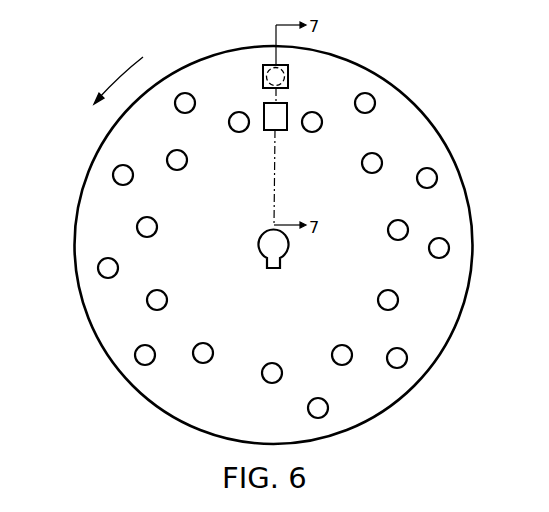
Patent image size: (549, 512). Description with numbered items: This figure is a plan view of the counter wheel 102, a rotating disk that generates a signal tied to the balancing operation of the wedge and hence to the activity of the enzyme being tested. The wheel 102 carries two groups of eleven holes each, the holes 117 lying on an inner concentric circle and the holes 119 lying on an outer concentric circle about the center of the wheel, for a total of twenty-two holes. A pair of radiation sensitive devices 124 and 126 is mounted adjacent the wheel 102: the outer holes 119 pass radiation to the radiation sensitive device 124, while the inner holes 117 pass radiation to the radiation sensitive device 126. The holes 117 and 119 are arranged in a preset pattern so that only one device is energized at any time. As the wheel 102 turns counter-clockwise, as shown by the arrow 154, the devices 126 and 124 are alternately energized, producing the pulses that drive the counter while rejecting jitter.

The counter wheel 102 is at (420, 110).
The holes 117 is at (170, 152).
The holes 119 is at (134, 178).
The radiation sensitive device 124 is at (290, 77).
The radiation sensitive device 126 is at (281, 131).
The arrow 154 is at (120, 72).